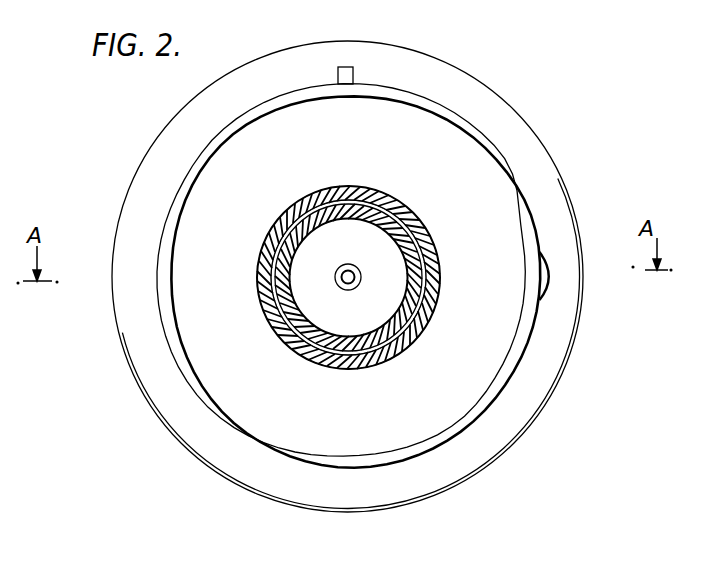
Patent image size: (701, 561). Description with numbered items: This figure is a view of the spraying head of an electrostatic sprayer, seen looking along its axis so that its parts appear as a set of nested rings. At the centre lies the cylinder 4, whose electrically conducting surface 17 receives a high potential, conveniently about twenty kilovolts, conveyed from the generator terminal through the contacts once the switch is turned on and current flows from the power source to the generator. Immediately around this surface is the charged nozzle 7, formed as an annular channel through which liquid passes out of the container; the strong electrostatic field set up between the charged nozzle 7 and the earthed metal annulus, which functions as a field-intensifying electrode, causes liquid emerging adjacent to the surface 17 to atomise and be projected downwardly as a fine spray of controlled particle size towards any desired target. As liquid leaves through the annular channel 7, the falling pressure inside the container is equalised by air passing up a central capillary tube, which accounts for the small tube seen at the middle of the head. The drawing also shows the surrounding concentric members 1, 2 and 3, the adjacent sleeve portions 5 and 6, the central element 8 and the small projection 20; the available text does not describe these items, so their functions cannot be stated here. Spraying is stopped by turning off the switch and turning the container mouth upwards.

The outer rim/housing 1 is at (489, 456).
The inner ring 2 is at (472, 125).
The intermediate ring 3 is at (264, 120).
The cylinder 4 is at (440, 266).
The inner sleeve 5 is at (412, 317).
The gap between sleeves 6 is at (352, 356).
The nozzle 7 is at (427, 237).
The central bore/pin 8 is at (356, 286).
The electrically conducting surface 17 is at (400, 200).
The tab/key 20 is at (342, 66).